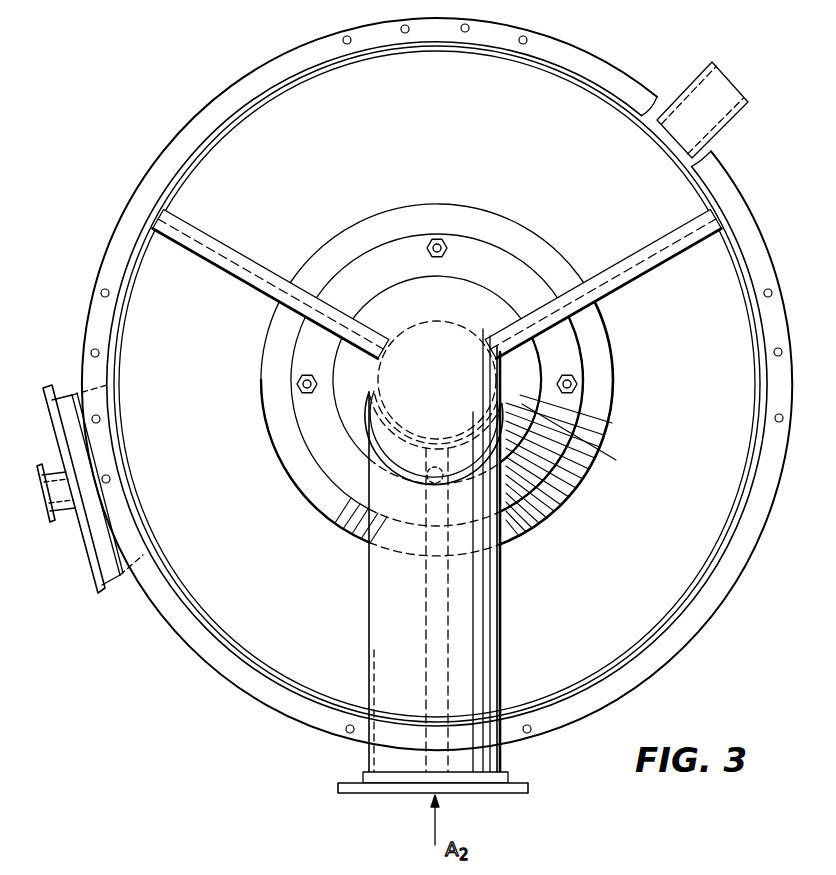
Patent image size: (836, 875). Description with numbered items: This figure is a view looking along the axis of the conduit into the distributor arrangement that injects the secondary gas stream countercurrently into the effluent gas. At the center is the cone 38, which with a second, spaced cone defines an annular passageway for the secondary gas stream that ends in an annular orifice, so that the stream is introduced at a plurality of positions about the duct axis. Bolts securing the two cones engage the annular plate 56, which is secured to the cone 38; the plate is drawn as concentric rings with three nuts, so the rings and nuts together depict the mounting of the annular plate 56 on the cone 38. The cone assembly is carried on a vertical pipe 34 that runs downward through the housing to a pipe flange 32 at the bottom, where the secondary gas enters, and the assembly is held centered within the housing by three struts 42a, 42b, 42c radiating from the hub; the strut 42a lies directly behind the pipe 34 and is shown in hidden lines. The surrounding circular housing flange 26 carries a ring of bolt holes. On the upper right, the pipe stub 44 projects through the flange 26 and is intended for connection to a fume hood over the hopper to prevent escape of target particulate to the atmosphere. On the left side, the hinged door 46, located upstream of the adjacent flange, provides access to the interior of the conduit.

The housing flange ring 26 is at (727, 195).
The inlet pipe flange 32 is at (352, 781).
The inlet pipe 34 is at (373, 593).
The cone 38 is at (600, 433).
The radial strut (hidden) 42a is at (447, 623).
The radial strut 42b is at (198, 233).
The radial strut 42c is at (647, 268).
The pipe stub 44 is at (730, 83).
The hinged door 46 is at (88, 557).
The annular plate 56 is at (517, 268).